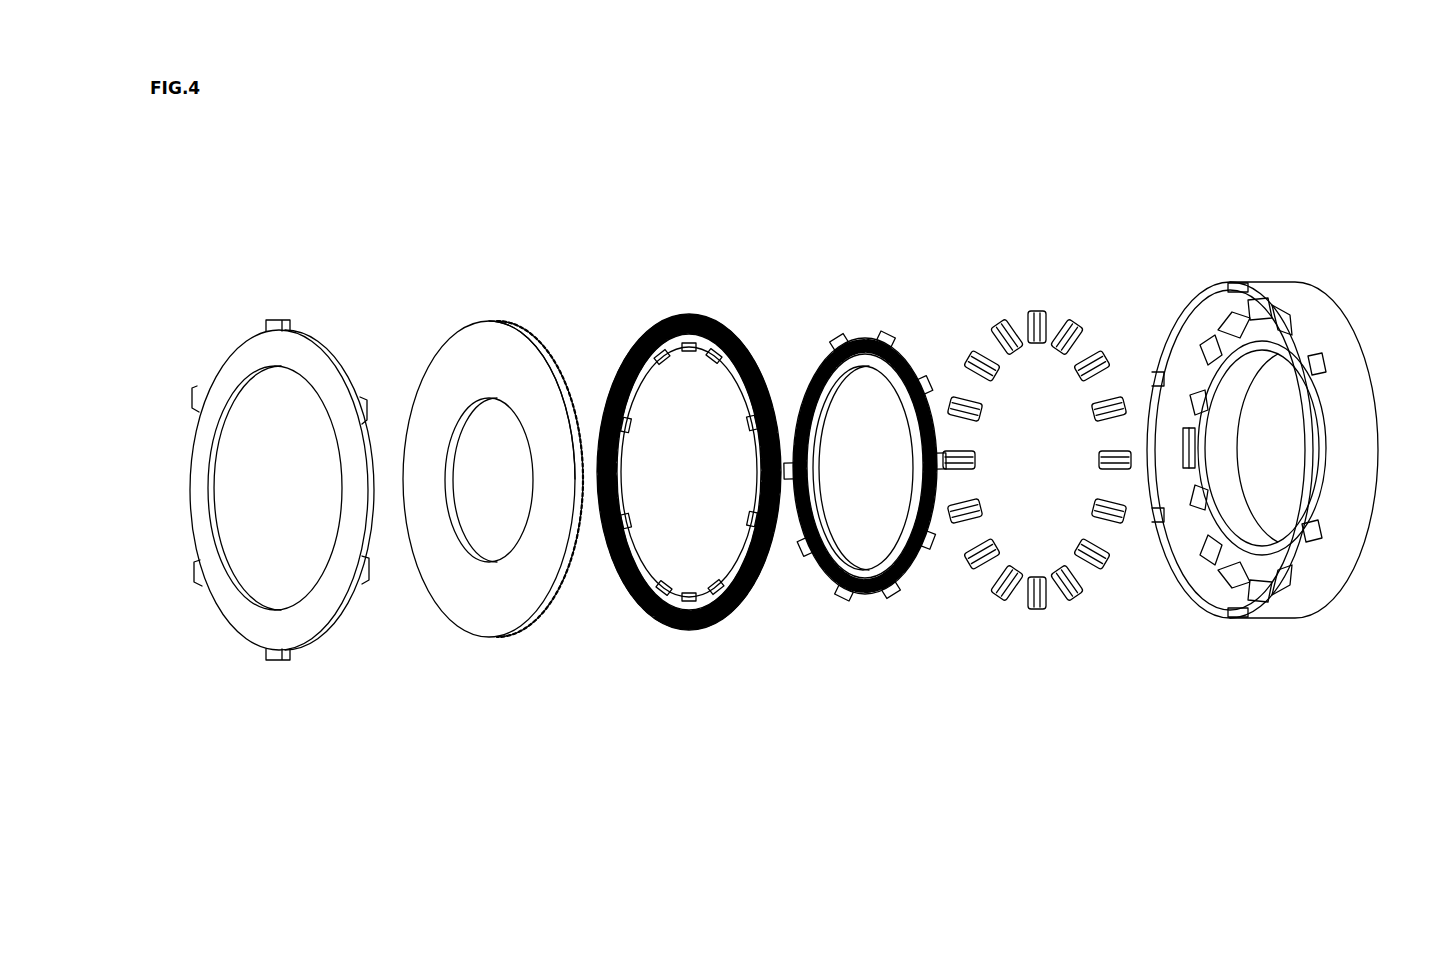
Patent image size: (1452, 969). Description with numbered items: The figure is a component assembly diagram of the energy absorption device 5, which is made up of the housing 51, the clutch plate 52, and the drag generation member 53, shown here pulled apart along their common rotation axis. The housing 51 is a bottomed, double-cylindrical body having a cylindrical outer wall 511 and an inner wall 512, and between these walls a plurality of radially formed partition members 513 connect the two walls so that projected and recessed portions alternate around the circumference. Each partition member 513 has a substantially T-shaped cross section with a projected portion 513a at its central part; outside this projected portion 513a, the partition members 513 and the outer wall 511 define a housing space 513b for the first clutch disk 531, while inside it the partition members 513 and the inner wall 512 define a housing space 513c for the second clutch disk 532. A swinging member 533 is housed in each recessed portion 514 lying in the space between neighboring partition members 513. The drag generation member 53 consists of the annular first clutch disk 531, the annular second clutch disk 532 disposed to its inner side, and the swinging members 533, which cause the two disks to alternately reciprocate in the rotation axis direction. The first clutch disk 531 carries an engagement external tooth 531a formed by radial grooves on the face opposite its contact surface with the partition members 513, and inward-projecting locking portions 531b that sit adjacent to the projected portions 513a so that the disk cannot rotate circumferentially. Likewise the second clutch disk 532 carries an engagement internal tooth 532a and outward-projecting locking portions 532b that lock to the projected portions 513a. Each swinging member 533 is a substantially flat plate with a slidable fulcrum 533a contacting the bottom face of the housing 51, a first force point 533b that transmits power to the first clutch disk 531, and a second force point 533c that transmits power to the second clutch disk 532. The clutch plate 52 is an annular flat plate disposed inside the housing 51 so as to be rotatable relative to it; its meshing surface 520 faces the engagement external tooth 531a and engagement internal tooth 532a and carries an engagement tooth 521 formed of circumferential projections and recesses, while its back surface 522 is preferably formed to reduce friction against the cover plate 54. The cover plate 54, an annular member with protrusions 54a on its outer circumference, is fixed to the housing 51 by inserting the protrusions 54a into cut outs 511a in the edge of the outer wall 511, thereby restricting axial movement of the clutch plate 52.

The energy absorption device 5 is at (518, 226).
The housing 51 is at (1367, 331).
The outer wall 511 is at (1370, 428).
The cut outs 511a is at (1326, 368).
The inner wall 512 is at (1235, 452).
The partition members 513 is at (1200, 338).
The projected portion 513a is at (1205, 350).
The housing space 513b is at (1243, 305).
The housing space 513c is at (1252, 342).
The recessed portion 514 is at (1190, 418).
The clutch plate 52 is at (420, 348).
The meshing surface 520 is at (565, 357).
The engagement tooth 521 is at (536, 340).
The back surface 522 is at (492, 372).
The drag generation member 53 is at (1053, 240).
The first clutch disk 531 is at (748, 326).
The engagement external tooth 531a is at (655, 326).
The locking portion 531b is at (679, 348).
The second clutch disk 532 is at (917, 340).
The engagement internal tooth 532a is at (812, 367).
The locking portion 532b is at (856, 338).
The swinging member 533 is at (1000, 312).
The fulcrum 533a is at (1048, 314).
The first force point 533b is at (1022, 308).
The second force point 533c is at (1027, 355).
The cover plate 54 is at (180, 426).
The protrusions 54a is at (273, 318).